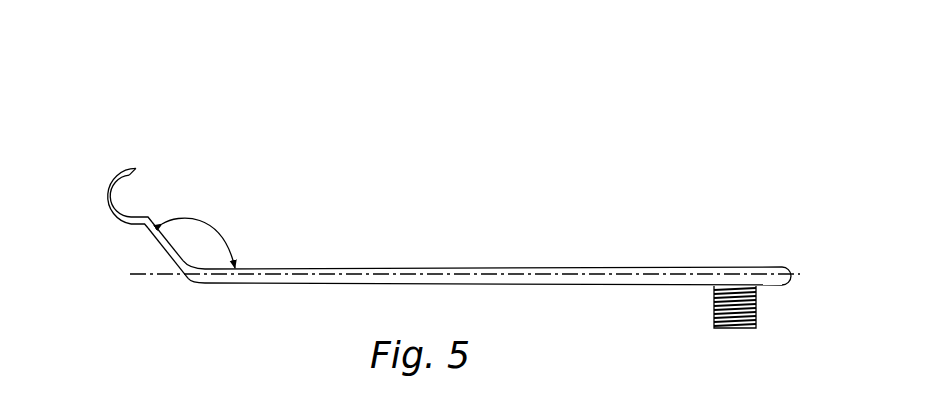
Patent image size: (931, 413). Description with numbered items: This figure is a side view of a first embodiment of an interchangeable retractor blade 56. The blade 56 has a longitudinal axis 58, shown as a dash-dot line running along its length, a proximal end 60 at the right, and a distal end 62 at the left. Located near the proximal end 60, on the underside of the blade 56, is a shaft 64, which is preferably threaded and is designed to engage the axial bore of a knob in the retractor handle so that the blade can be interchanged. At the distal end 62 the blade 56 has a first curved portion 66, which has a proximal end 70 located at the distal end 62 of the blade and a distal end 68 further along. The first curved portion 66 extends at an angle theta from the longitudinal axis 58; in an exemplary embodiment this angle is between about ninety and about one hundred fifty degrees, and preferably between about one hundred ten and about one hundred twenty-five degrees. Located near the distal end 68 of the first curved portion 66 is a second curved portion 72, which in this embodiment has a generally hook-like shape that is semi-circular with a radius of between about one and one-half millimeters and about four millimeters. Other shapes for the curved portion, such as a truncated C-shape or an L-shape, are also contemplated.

The blade 56 is at (151, 120).
The longitudinal axis 58 is at (799, 274).
The proximal end 60 is at (768, 230).
The distal end 62 is at (169, 292).
The shaft 64 is at (714, 306).
The first curved portion 66 is at (157, 248).
The distal end of first curved portion 68 is at (149, 216).
The proximal end of first curved portion 70 is at (191, 281).
The second curved portion 72 is at (104, 207).